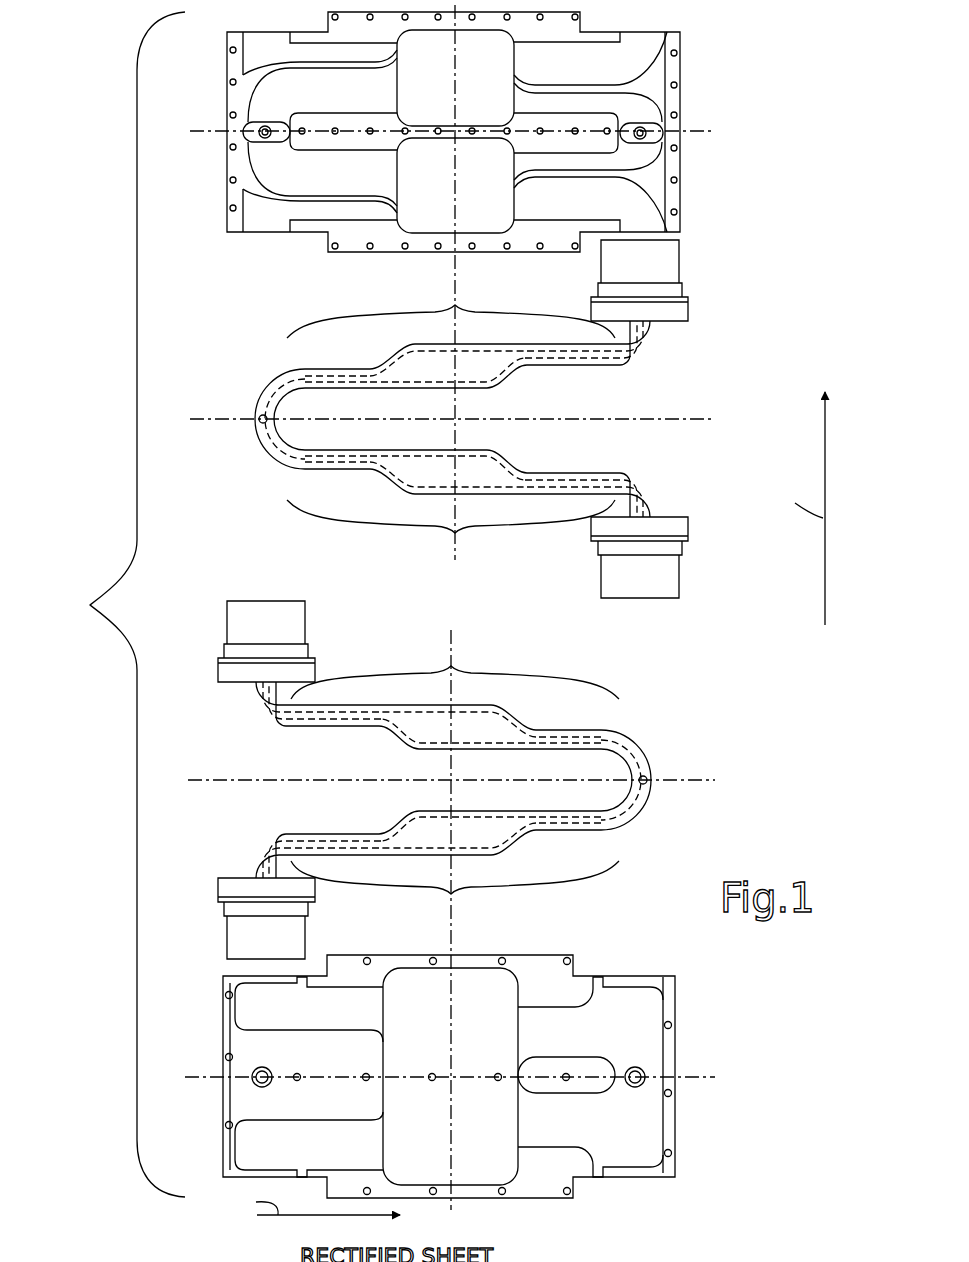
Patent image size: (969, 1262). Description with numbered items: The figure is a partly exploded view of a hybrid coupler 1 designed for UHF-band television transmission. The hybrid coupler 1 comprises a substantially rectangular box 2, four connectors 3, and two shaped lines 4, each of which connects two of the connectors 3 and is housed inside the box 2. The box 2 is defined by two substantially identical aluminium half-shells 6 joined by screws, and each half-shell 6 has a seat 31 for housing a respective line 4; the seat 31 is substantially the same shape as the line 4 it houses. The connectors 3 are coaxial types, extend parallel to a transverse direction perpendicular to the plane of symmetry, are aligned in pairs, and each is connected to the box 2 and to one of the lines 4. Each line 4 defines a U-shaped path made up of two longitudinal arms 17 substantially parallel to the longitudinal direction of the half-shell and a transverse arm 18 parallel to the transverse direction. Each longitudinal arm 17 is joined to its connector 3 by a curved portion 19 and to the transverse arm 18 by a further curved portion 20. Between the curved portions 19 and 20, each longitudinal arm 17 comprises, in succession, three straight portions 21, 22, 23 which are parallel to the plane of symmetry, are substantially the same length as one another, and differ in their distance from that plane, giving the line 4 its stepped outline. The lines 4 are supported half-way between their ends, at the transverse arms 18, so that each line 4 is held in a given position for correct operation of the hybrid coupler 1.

The hybrid coupler 1 is at (82, 597).
The box 2 is at (702, 181).
The connector 3 is at (685, 272).
The shaped line 4 is at (663, 410).
The half-shell 6 is at (690, 96).
The longitudinal arm 17 is at (452, 300).
The transverse arm 18 is at (250, 410).
The curved portion 19 is at (641, 360).
The further curved portion 20 is at (260, 377).
The straight portion 21 is at (547, 355).
The straight portion 22 is at (435, 475).
The straight portion 23 is at (332, 380).
The seat 31 is at (622, 56).